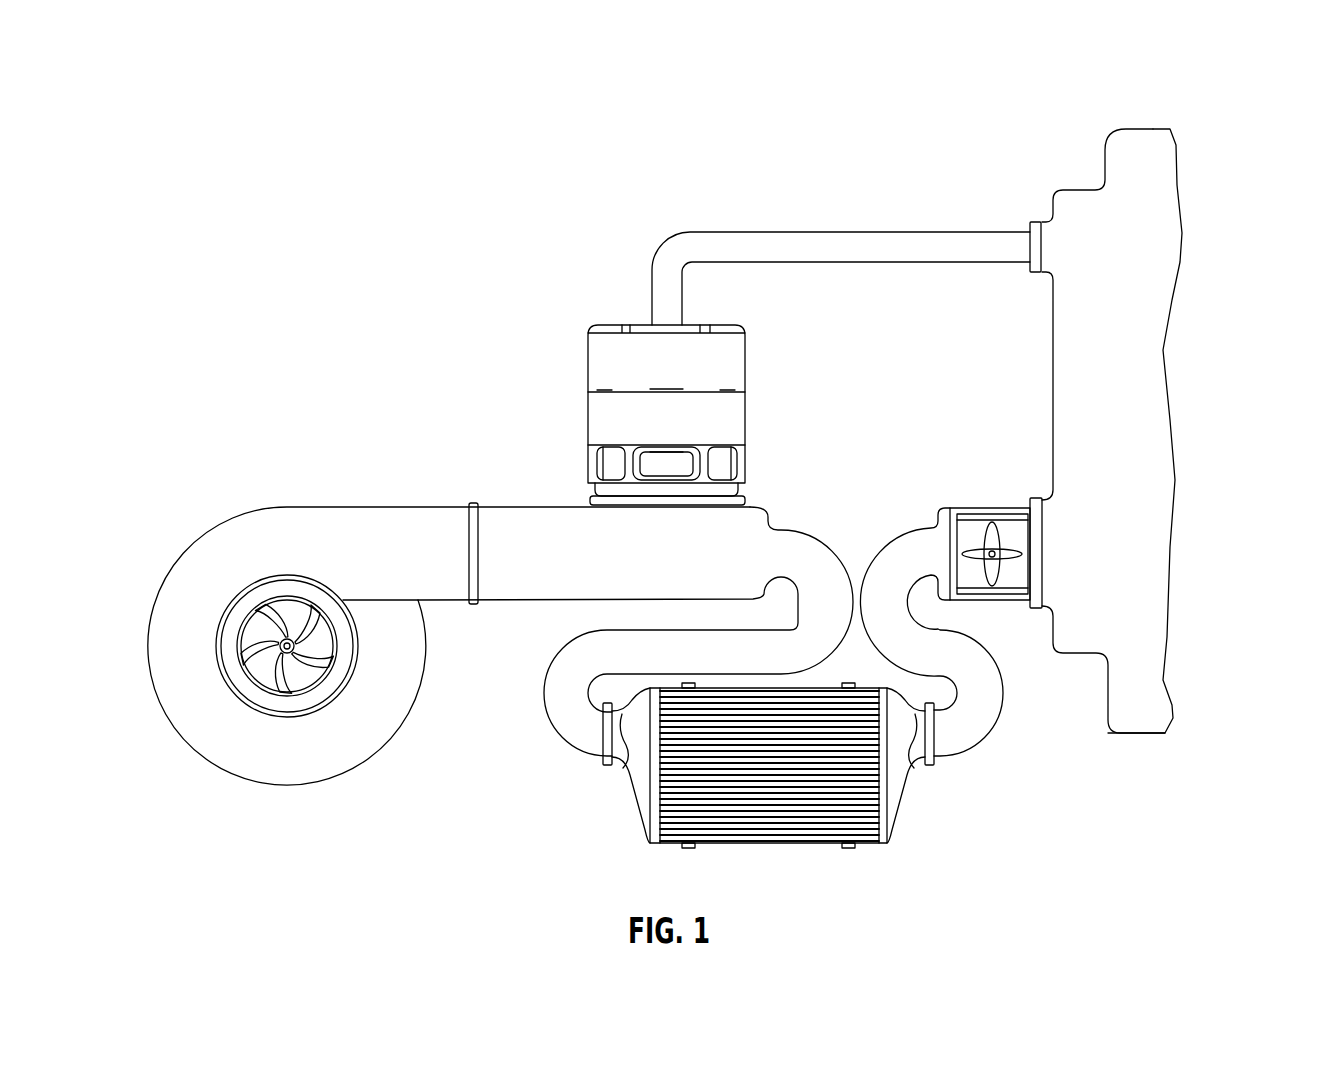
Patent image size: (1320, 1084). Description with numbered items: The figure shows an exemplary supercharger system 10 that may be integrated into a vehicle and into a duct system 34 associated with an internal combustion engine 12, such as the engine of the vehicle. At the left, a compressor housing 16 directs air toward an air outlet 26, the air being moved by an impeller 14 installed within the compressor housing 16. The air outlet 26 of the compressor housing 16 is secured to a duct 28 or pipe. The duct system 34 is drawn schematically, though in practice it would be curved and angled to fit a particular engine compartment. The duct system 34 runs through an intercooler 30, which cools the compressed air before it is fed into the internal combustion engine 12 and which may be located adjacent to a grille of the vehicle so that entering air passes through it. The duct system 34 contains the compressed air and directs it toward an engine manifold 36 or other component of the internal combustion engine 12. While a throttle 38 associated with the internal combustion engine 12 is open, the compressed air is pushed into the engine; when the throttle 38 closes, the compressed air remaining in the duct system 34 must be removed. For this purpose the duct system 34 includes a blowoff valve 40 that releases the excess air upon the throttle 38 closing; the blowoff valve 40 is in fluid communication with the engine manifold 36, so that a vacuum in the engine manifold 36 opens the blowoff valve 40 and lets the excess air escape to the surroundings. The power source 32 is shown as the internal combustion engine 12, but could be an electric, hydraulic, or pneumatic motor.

The supercharger system 10 is at (449, 636).
The internal combustion engine 12 is at (1153, 129).
The impeller 14 is at (268, 688).
The compressor housing 16 is at (293, 507).
The air outlet 26 is at (475, 504).
The duct 28 is at (500, 590).
The intercooler 30 is at (892, 803).
The power source 32 is at (1190, 760).
The duct system 34 is at (482, 241).
The engine manifold 36 is at (1094, 196).
The throttle 38 is at (1013, 547).
The blowoff valve 40 is at (745, 365).